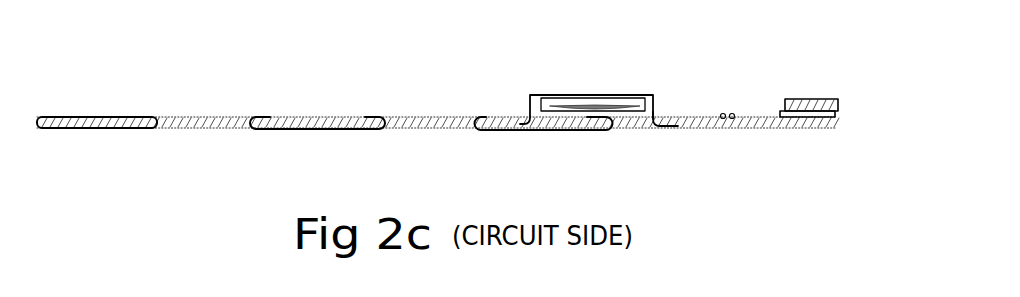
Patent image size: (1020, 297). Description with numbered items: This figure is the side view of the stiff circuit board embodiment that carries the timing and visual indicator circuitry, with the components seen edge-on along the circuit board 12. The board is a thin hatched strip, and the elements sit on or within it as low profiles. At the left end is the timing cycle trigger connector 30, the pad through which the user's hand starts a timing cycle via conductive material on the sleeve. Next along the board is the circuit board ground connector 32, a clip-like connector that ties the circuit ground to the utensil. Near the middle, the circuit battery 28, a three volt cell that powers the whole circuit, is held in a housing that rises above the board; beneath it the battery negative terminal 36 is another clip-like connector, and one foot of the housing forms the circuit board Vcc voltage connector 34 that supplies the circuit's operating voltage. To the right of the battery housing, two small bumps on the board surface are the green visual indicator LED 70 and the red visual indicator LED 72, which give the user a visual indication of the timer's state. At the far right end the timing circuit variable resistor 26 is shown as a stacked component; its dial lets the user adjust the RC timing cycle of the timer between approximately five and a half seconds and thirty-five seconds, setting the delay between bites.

The circuit board 12 is at (437, 123).
The timing circuit variable resistor 26 is at (817, 100).
The circuit battery 28 is at (570, 105).
The timing cycle trigger connector 30 is at (90, 117).
The circuit board ground connector 32 is at (293, 130).
The circuit board Vcc voltage connector 34 is at (670, 130).
The battery negative terminal 36 is at (553, 130).
The green visual indicator LED 70 is at (723, 113).
The red visual indicator LED 72 is at (732, 113).